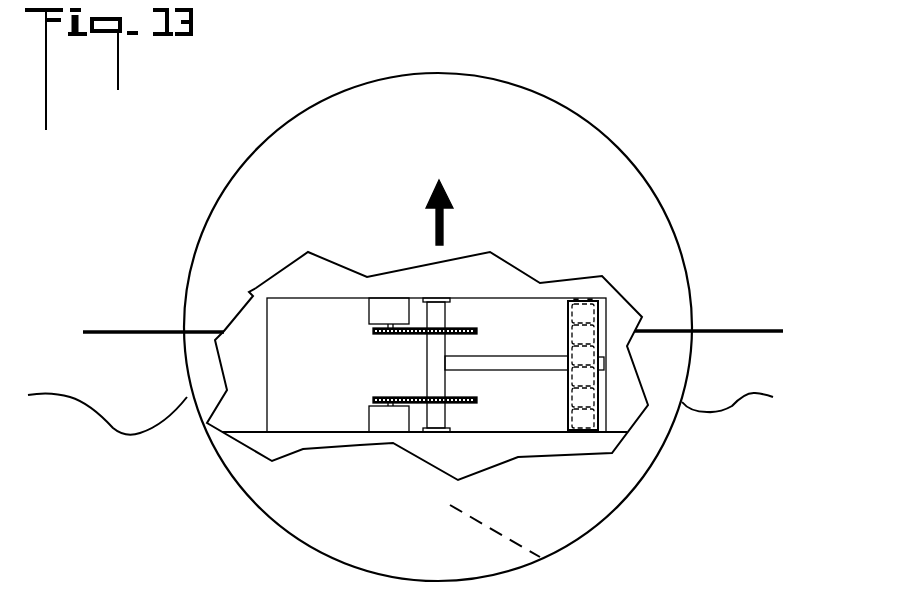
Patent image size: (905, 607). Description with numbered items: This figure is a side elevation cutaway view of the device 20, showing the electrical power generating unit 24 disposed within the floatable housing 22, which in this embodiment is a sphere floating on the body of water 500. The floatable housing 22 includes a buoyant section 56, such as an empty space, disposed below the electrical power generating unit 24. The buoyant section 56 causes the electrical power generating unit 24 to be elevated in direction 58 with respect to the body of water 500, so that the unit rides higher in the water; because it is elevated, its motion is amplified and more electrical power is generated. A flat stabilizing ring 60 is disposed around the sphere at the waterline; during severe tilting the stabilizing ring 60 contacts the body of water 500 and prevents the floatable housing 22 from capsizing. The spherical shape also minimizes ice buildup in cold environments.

The apparatus 20 is at (713, 145).
The floatable housing 22 is at (567, 105).
The electrical power generating unit 24 is at (303, 286).
The buoyant section 56 is at (540, 557).
The direction 58 is at (443, 233).
The stabilizing ring 60 is at (725, 329).
The body of water 500 is at (114, 432).